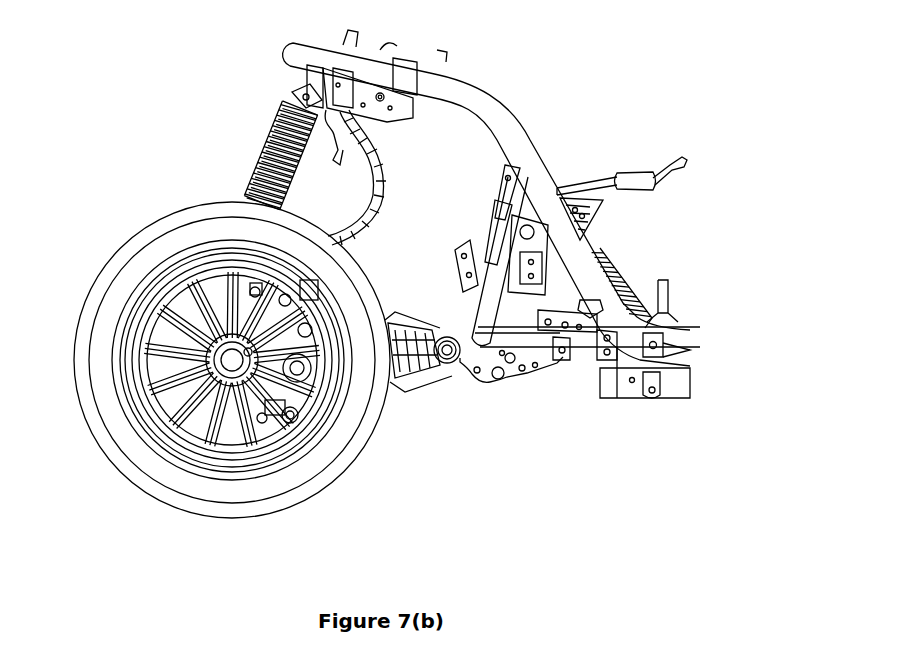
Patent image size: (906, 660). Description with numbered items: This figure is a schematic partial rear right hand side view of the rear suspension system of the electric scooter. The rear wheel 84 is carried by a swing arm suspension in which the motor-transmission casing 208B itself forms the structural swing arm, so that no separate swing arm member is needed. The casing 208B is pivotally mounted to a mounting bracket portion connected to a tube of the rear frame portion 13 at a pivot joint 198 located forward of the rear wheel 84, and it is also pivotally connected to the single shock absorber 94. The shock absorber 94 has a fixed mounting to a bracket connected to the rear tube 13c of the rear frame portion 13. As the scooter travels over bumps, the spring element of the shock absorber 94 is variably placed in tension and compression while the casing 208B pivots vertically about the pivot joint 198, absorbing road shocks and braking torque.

The rear wheel 84 is at (371, 441).
The shock absorber 94 is at (263, 148).
The rear frame portion 13 is at (504, 117).
The rear tube 13c is at (340, 58).
The motor-transmission casing 208B is at (420, 324).
The pivot joint 198 is at (453, 362).